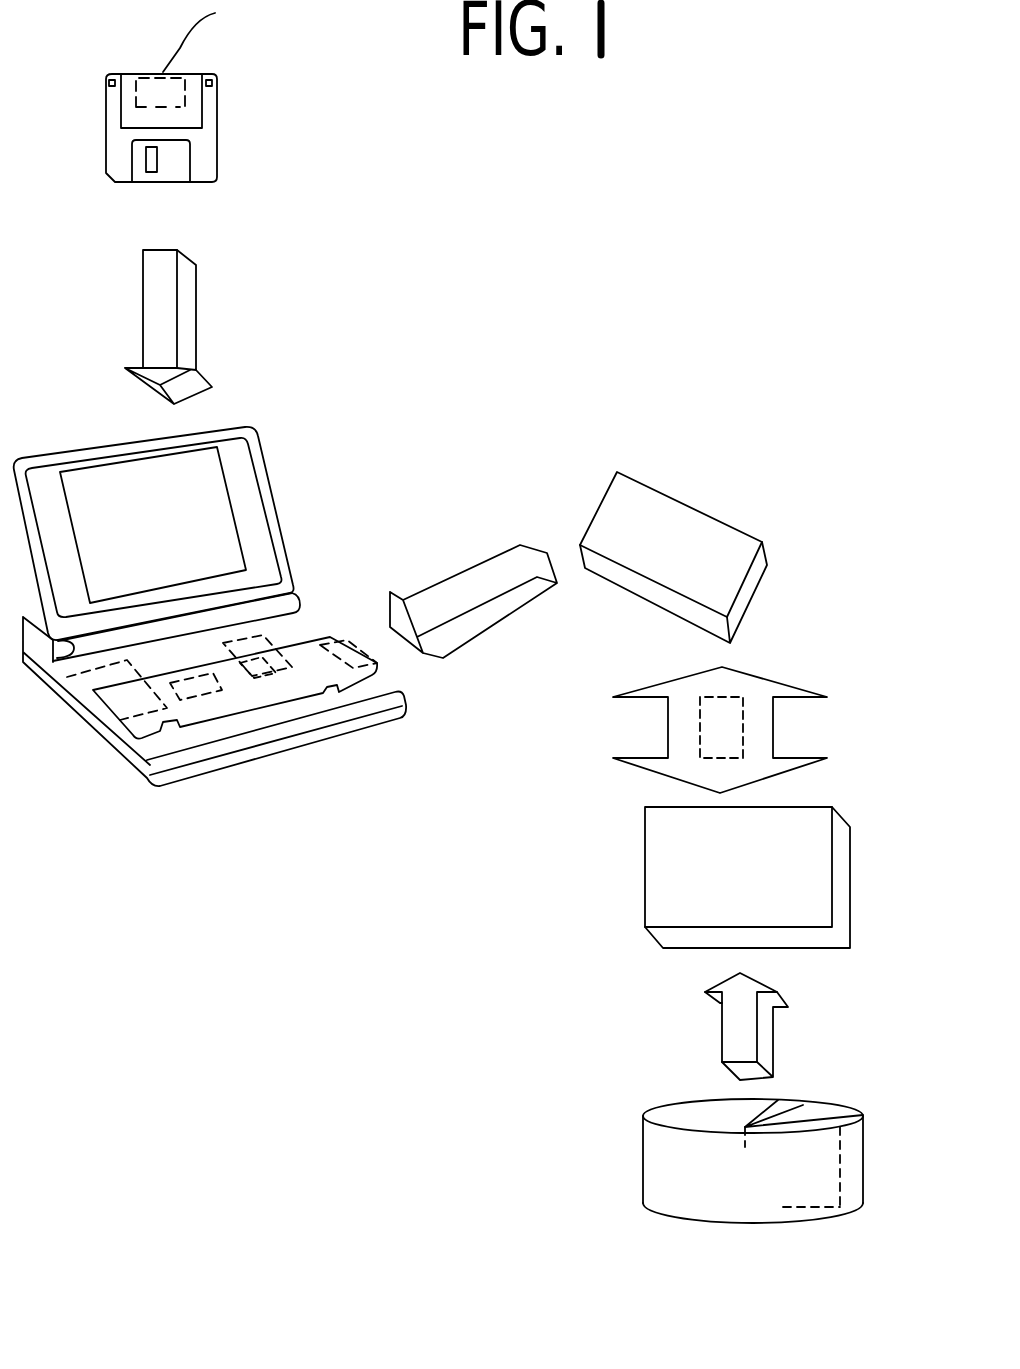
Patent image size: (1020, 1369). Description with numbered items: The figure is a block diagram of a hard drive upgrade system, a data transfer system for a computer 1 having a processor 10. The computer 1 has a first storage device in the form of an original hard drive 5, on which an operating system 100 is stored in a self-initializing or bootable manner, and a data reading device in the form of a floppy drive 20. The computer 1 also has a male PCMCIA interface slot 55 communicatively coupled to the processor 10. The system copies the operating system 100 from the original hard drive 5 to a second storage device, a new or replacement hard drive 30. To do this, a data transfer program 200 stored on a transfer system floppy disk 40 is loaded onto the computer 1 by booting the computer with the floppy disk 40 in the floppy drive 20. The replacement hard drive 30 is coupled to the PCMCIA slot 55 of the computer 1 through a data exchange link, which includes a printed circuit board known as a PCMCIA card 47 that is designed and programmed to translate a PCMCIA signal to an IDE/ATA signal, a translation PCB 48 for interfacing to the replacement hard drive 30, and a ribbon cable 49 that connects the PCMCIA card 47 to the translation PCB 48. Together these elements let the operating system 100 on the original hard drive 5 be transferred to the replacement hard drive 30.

The computer 1 is at (252, 505).
The original hard drive 5 is at (297, 623).
The processor 10 is at (197, 688).
The floppy drive 20 is at (77, 680).
The replacement hard drive 30 is at (857, 1183).
The transfer system floppy disk 40 is at (217, 115).
The PCMCIA card 47 is at (762, 587).
The translation PCB 48 is at (840, 887).
The ribbon cable 49 is at (797, 683).
The PCMCIA interface slot 55 is at (347, 650).
The operating system 100 is at (283, 673).
The data transfer program 200 is at (199, 53).